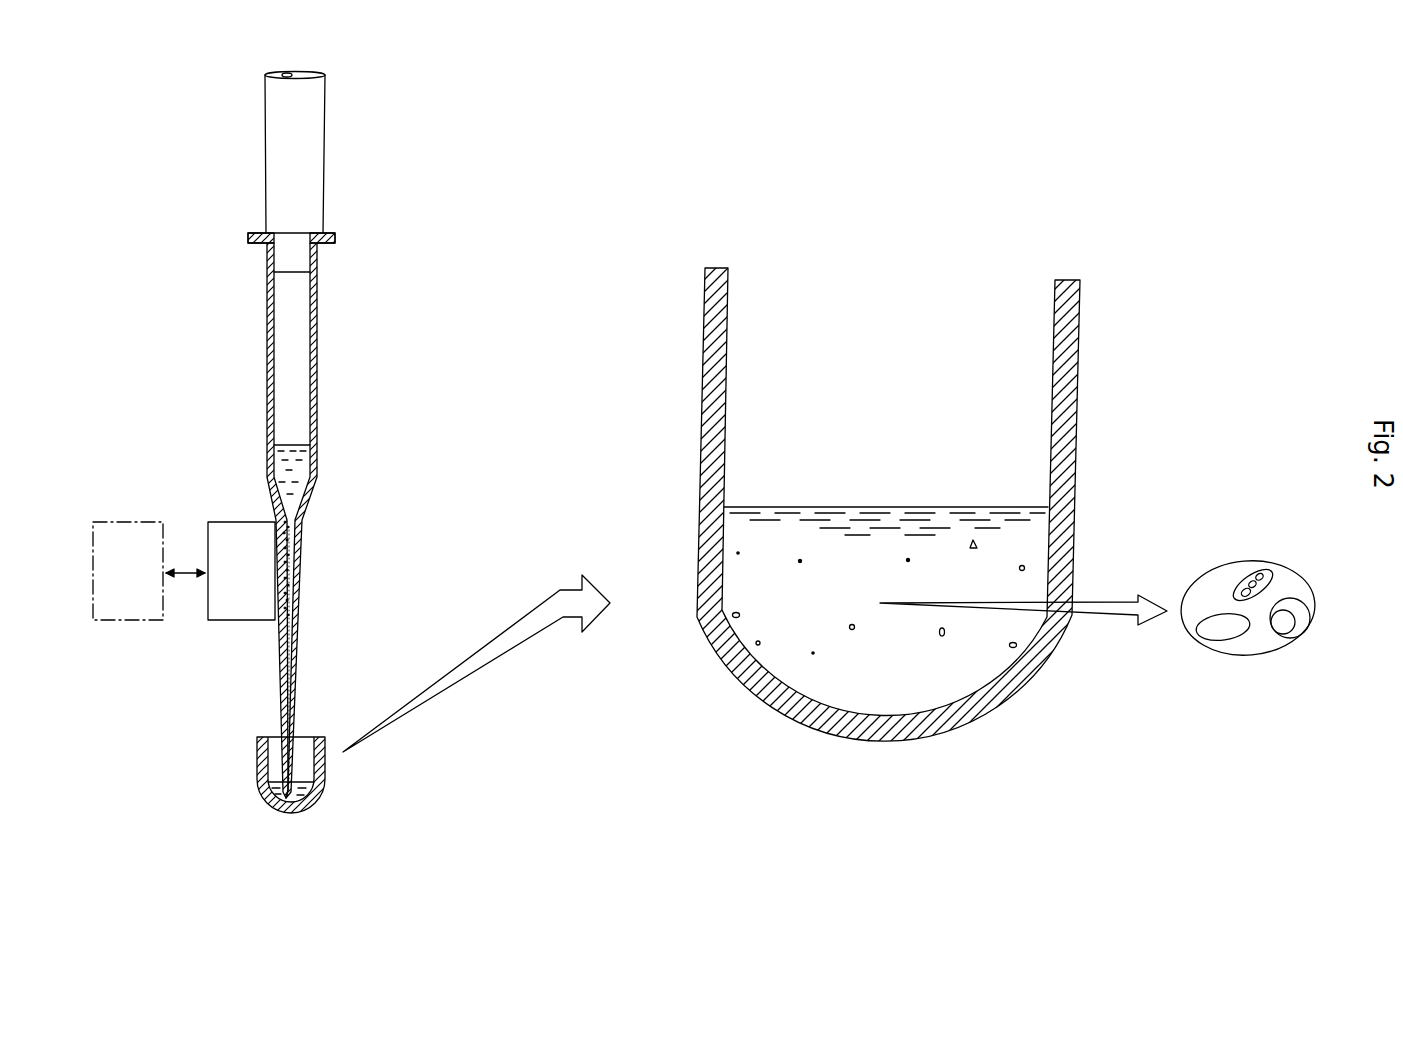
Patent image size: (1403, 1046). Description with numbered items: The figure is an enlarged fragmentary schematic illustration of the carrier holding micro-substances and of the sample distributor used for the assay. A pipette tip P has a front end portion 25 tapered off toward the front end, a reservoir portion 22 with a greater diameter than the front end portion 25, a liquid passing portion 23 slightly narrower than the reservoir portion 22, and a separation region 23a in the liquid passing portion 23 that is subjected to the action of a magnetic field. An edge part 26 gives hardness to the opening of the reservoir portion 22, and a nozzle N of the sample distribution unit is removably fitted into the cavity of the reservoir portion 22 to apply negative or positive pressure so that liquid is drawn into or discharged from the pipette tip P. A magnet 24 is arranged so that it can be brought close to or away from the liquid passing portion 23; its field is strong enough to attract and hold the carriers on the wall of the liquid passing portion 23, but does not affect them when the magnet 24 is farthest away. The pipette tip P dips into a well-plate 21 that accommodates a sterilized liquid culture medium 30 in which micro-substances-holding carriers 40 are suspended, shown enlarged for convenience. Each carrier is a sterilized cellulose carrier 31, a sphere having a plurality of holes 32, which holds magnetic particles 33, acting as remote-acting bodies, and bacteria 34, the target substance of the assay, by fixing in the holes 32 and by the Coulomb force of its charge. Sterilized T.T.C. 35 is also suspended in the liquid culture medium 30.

The nozzle N is at (315, 92).
The pipette tip P is at (322, 315).
The well-plate 21 is at (258, 755).
The reservoir portion 22 is at (318, 413).
The liquid passing portion 23 is at (300, 692).
The separation region 23a is at (297, 568).
The magnet 24 is at (225, 526).
The front end portion 25 is at (272, 807).
The edge part 26 is at (338, 240).
The liquid culture medium 30 is at (815, 530).
The cellulose carrier 31 is at (1290, 565).
The holes 32 is at (1235, 598).
The magnetic particle 33 is at (973, 541).
The bacteria 34 is at (732, 615).
The T.T.C. 35 is at (1024, 568).
The micro-substances-holding carrier 40 is at (290, 530).